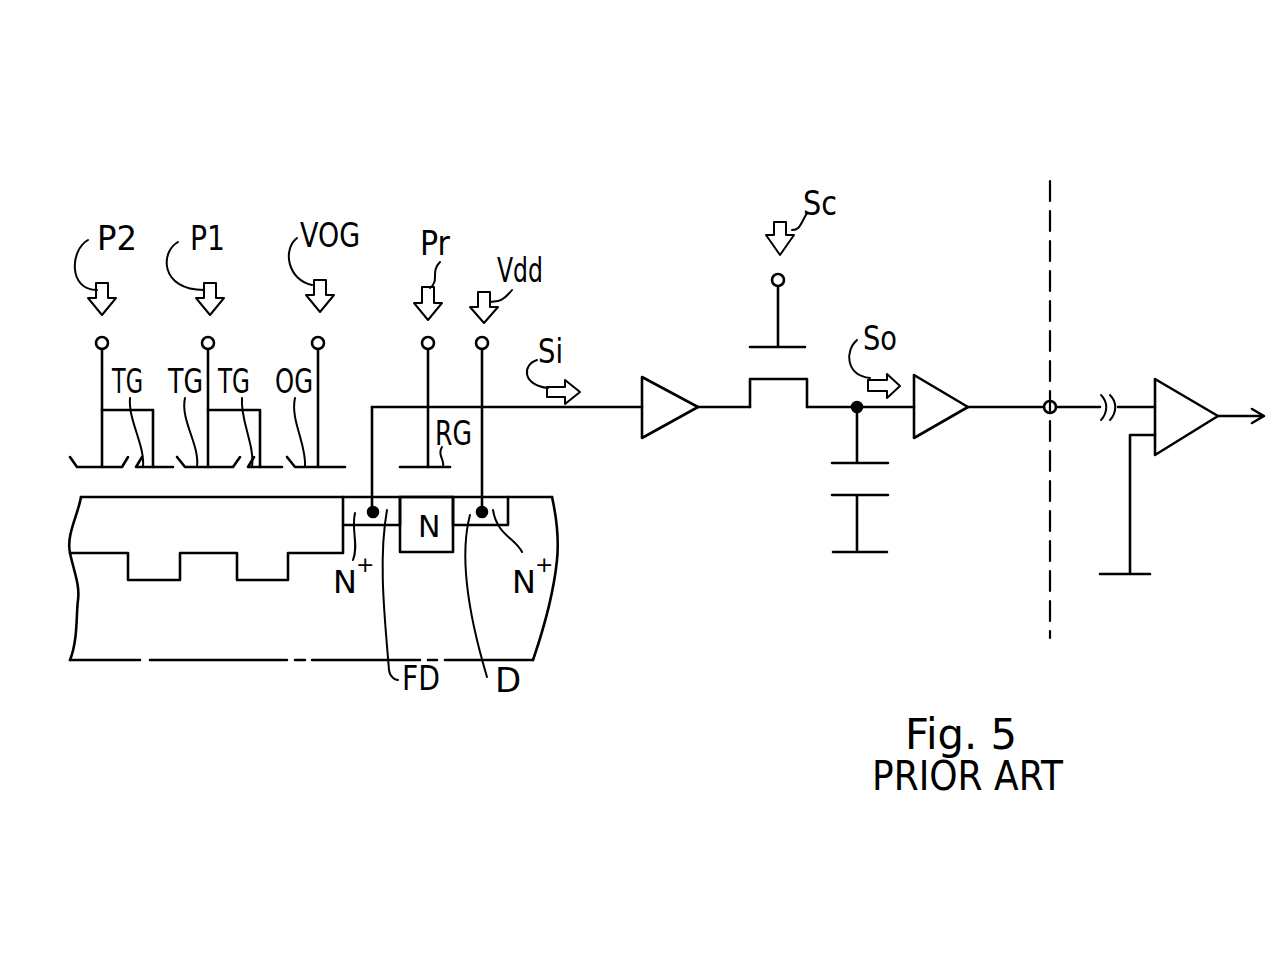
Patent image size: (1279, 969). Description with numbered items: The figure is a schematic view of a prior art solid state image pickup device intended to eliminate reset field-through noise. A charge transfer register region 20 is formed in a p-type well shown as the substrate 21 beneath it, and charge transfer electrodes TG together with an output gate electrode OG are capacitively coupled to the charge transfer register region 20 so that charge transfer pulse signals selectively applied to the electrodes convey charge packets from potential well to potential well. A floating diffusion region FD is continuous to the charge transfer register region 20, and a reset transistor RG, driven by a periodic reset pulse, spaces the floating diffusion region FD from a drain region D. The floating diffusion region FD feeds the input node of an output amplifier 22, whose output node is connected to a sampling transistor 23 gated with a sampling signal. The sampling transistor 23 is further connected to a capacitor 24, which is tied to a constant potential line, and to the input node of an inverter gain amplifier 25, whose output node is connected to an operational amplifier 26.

The charge transfer register region 20 is at (157, 552).
The P-type substrate 21 is at (325, 627).
The output amplifier 22 is at (653, 433).
The sampling transistor 23 is at (755, 345).
The capacitor 24 is at (840, 462).
The inverter gain amplifier 25 is at (935, 425).
The operational amplifier 26 is at (1174, 381).